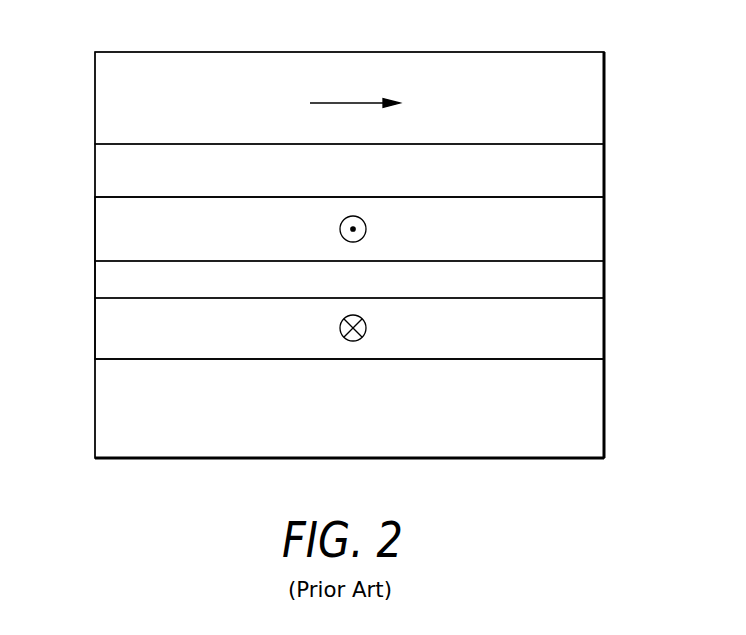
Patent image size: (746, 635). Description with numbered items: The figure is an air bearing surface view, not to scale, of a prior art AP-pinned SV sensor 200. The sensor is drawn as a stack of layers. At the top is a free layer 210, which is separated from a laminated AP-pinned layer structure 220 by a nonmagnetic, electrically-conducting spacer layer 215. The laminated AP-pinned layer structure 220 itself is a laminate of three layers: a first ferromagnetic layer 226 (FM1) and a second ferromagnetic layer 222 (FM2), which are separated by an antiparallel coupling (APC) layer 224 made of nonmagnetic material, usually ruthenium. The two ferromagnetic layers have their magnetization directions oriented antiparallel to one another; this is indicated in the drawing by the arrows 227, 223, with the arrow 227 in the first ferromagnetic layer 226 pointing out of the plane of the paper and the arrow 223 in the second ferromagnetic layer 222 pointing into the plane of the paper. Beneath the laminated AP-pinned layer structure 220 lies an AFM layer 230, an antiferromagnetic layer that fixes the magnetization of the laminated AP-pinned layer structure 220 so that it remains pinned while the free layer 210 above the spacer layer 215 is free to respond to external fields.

The AP-pinned SV sensor 200 is at (584, 506).
The free layer 210 is at (602, 102).
The spacer layer 215 is at (602, 173).
The laminated AP-pinned layer structure 220 is at (75, 198).
The second ferromagnetic layer 222 is at (602, 332).
The arrow 223 is at (367, 328).
The antiparallel coupling (APC) layer 224 is at (602, 280).
The first ferromagnetic layer 226 is at (602, 227).
The arrow 227 is at (367, 229).
The AFM layer 230 is at (602, 413).